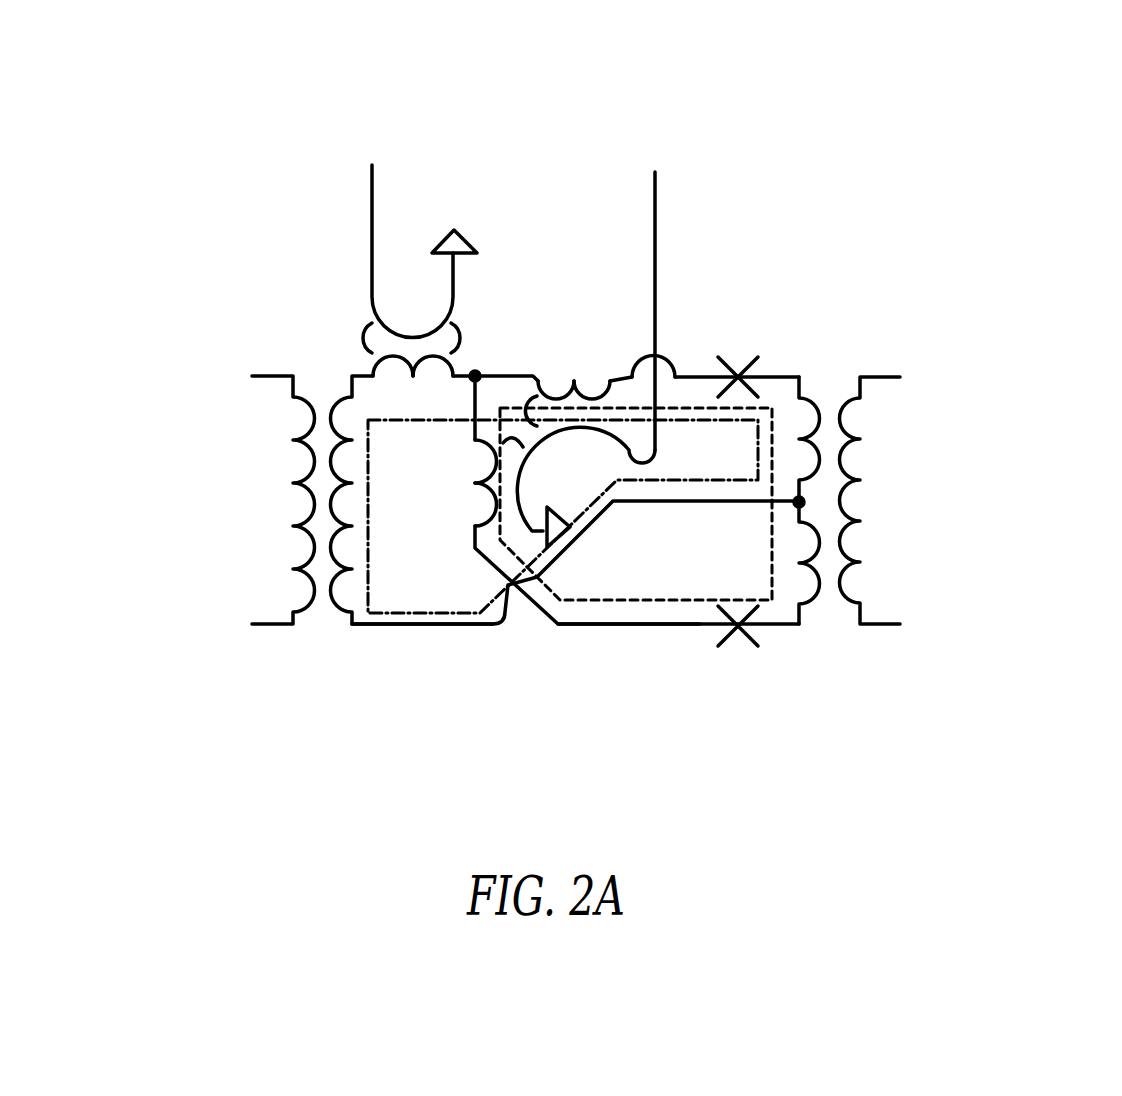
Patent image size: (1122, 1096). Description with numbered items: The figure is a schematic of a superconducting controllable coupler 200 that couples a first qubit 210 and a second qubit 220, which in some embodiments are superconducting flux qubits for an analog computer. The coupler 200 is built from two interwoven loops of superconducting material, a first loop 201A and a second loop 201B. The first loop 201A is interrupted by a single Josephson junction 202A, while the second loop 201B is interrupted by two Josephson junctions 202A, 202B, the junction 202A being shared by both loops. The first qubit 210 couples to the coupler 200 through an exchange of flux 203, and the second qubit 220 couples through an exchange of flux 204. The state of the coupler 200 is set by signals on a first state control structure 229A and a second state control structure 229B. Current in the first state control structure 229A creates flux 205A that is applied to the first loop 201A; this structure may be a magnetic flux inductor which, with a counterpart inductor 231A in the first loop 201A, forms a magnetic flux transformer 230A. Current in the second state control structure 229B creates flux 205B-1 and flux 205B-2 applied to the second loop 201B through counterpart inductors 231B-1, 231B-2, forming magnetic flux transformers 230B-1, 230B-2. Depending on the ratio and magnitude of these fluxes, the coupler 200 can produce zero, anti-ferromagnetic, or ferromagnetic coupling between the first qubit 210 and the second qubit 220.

The controllable coupler 200 is at (240, 95).
The first qubit 210 is at (240, 447).
The second qubit 220 is at (905, 473).
The flux 203 is at (323, 607).
The flux 204 is at (830, 615).
The first loop 201A is at (405, 615).
The second loop 201B is at (585, 603).
The Josephson junction 202A is at (735, 352).
The Josephson junction 202B is at (740, 645).
The first state control structure 229A is at (368, 200).
The second state control structure 229B is at (660, 234).
The flux 205A is at (364, 323).
The flux 205B-1 is at (622, 402).
The flux 205B-2 is at (505, 542).
The magnetic flux transformer 230A is at (335, 332).
The counterpart inductor 231A is at (367, 364).
The magnetic flux transformer 230B-1 is at (533, 388).
The magnetic flux transformer 230B-2 is at (486, 437).
The counterpart inductor 231B-1 is at (588, 370).
The counterpart inductor 231B-2 is at (477, 504).